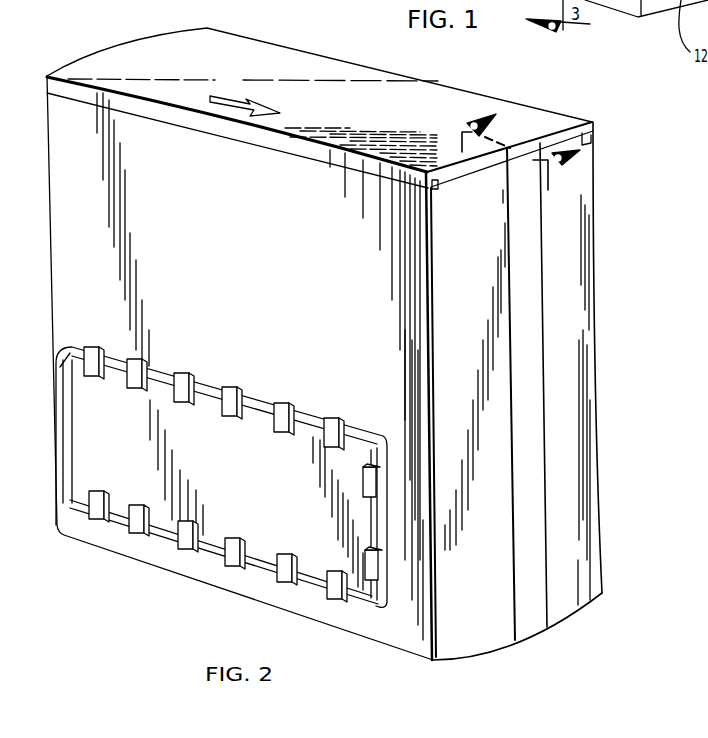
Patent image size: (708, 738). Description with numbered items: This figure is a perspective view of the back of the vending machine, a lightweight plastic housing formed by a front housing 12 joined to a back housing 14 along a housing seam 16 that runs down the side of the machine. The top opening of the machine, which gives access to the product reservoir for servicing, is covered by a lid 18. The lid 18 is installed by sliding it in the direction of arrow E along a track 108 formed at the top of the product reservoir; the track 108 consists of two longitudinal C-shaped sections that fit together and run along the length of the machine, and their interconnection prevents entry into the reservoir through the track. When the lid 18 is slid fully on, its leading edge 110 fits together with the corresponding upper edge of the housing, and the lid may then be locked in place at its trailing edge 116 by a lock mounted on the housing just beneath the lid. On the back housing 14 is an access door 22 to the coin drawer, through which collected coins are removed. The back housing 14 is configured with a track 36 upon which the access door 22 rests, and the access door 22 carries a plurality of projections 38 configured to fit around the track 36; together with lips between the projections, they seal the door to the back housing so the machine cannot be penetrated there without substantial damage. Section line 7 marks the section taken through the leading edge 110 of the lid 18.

The side panel of container 12 is at (570, 325).
The front panel 14 is at (460, 623).
The bottom of side panel 16 is at (535, 636).
The lid 18 is at (352, 92).
The door frame 22 is at (150, 480).
The rail 36 is at (200, 374).
The clip 38 is at (278, 413).
The latch 108 is at (438, 190).
The hinge tab 110 is at (513, 160).
The lid edge 116 is at (120, 46).
The section line 7- 7 is at (511, 152).